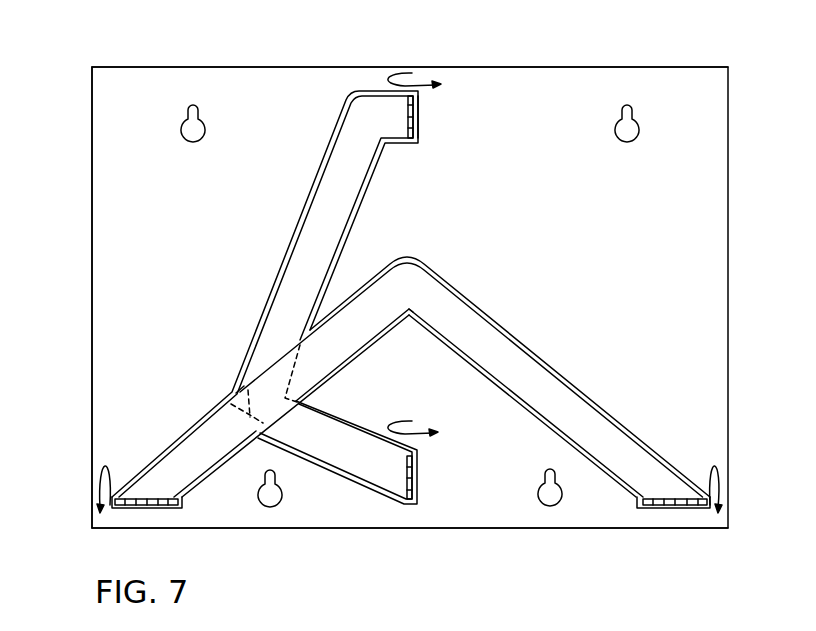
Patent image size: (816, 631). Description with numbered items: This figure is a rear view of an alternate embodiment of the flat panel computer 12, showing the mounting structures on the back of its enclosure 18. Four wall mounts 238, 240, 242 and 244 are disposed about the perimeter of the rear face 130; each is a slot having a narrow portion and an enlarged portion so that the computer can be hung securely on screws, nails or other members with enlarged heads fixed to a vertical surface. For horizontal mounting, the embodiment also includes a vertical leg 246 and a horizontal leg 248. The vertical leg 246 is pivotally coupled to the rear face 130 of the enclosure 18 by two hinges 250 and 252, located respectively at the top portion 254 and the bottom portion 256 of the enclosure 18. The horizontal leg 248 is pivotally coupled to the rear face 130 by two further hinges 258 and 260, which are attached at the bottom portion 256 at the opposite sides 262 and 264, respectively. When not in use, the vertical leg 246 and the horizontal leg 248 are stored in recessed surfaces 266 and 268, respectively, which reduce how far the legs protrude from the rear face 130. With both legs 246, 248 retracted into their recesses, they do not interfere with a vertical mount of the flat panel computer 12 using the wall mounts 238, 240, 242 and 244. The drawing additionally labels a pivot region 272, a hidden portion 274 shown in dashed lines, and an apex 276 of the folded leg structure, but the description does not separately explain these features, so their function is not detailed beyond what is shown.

The flat panel computer 12 is at (64, 249).
The enclosure 18 is at (92, 191).
The rear face 130 is at (122, 80).
The wall mount 238 is at (193, 105).
The wall mount 240 is at (628, 106).
The wall mount 242 is at (266, 507).
The wall mount 244 is at (552, 506).
The vertical leg 246 is at (306, 208).
The horizontal leg 248 is at (478, 305).
The hinge 250 is at (416, 112).
The hinge 252 is at (418, 485).
The top portion 254 is at (311, 67).
The bottom portion 256 is at (331, 529).
The hinge 258 is at (153, 509).
The hinge 260 is at (673, 509).
The side 262 is at (92, 527).
The side 264 is at (728, 527).
The recessed surface 266 is at (418, 124).
The recessed surface 268 is at (566, 373).
The hinge 272 is at (238, 374).
The hidden hinge portion 274 is at (242, 368).
The apex of third arm 276 is at (404, 307).